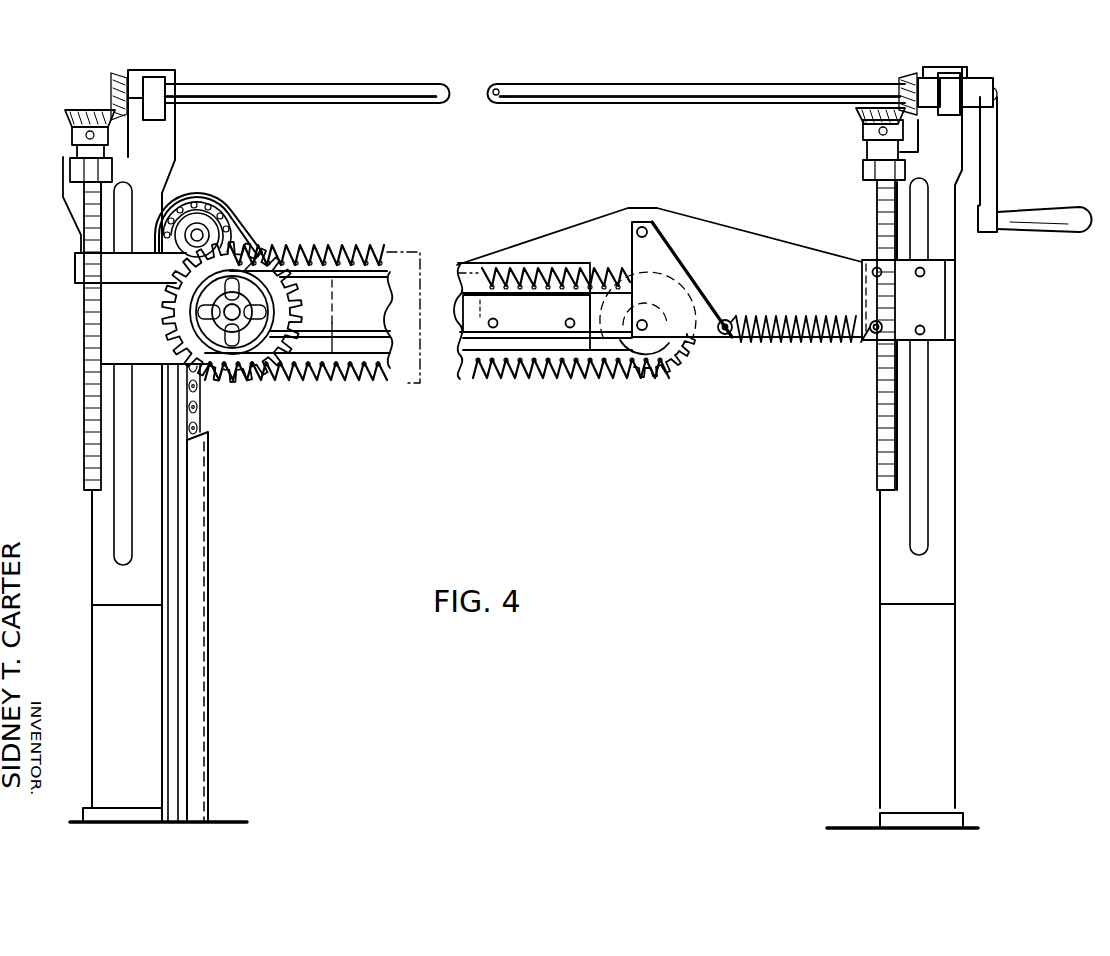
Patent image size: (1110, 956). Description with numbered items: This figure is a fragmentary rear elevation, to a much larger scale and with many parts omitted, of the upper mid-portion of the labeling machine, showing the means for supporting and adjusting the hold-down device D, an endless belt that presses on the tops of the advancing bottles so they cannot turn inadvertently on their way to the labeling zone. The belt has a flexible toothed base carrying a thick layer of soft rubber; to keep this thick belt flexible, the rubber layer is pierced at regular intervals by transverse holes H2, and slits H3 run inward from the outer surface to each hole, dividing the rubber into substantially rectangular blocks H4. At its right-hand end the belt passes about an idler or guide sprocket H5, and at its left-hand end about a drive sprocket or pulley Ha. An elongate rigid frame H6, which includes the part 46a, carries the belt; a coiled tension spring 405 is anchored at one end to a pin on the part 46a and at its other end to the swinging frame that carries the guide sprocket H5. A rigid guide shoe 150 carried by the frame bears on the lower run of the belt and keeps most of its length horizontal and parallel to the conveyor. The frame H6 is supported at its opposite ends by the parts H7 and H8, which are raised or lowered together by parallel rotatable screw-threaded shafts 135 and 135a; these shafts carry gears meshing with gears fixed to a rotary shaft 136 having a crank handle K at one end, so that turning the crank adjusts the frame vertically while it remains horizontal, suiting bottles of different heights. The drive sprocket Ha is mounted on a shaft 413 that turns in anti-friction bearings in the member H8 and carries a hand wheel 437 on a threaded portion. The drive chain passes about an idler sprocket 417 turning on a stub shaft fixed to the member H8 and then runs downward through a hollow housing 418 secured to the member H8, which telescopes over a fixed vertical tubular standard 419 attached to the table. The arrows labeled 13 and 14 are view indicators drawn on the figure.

The rotary shaft 136 is at (674, 93).
The screw-threaded shaft 135 is at (82, 238).
The screw-threaded shaft 135a is at (877, 215).
The idler sprocket 417 is at (208, 208).
The shaft 413 is at (233, 312).
The hand wheel 437 is at (236, 356).
The slits H3 is at (333, 250).
The holes H2 is at (308, 284).
The drive sprocket or pulley Ha is at (275, 322).
The rectangular blocks H4 is at (310, 383).
The guide shoe 150 is at (362, 383).
The section line 13 is at (152, 304).
The section line 14 is at (150, 227).
The hold-down device D is at (439, 222).
The frame part 46a is at (540, 247).
The elongate rigid frame H6 is at (709, 212).
The idler sprocket or guide pulley H5 is at (649, 348).
The coiled tension spring 405 is at (811, 344).
The frame supporting part H7 is at (935, 300).
The crank handle K is at (1046, 214).
The frame supporting member H8 is at (112, 342).
The hollow housing 418 is at (190, 584).
The tubular standard 419 is at (190, 676).